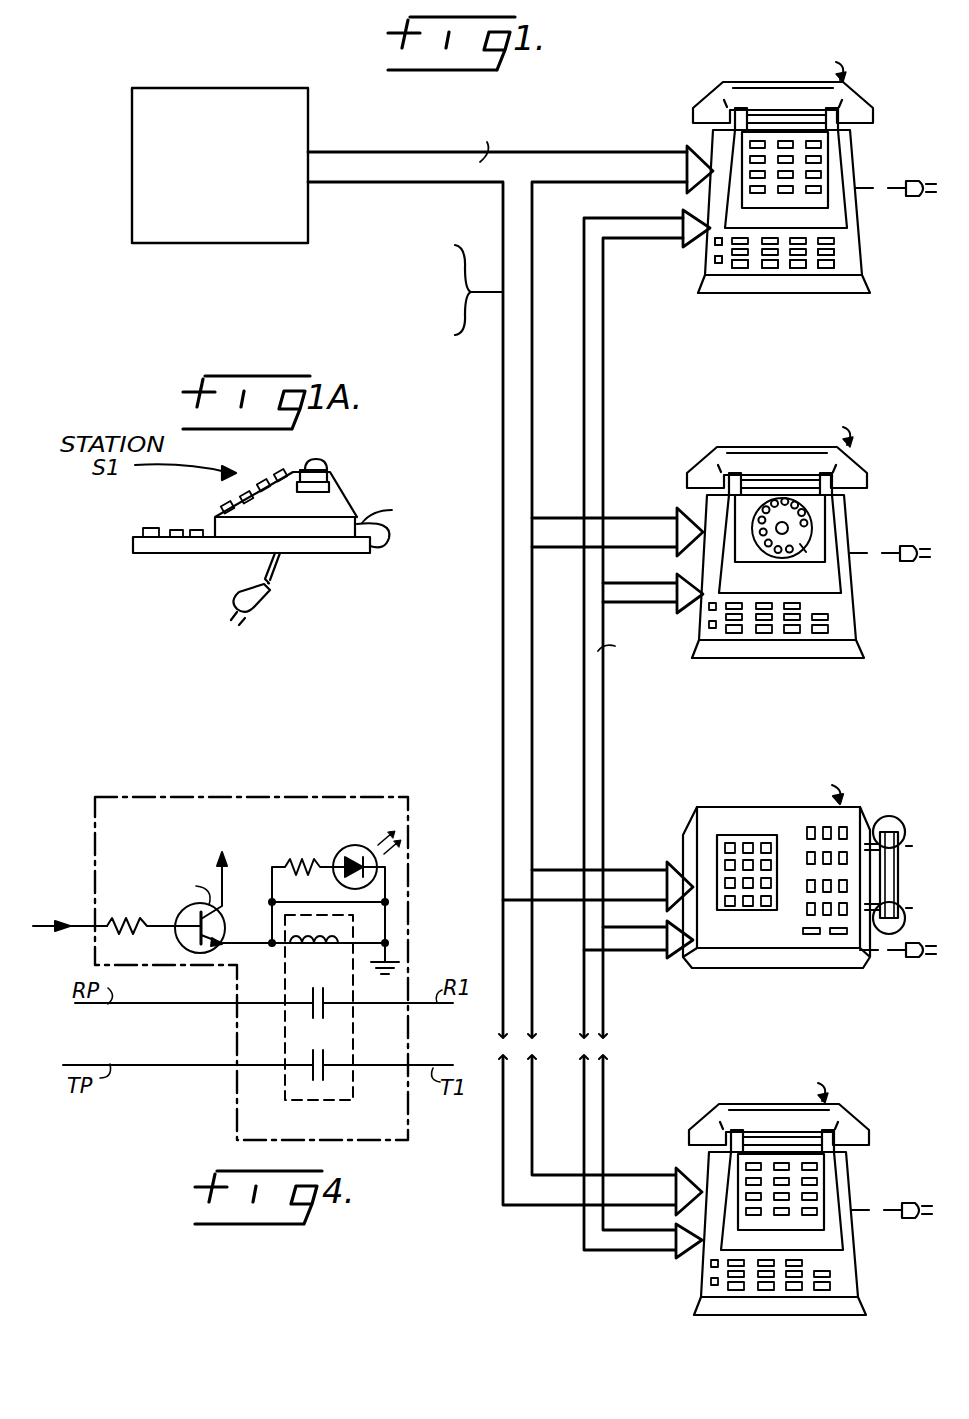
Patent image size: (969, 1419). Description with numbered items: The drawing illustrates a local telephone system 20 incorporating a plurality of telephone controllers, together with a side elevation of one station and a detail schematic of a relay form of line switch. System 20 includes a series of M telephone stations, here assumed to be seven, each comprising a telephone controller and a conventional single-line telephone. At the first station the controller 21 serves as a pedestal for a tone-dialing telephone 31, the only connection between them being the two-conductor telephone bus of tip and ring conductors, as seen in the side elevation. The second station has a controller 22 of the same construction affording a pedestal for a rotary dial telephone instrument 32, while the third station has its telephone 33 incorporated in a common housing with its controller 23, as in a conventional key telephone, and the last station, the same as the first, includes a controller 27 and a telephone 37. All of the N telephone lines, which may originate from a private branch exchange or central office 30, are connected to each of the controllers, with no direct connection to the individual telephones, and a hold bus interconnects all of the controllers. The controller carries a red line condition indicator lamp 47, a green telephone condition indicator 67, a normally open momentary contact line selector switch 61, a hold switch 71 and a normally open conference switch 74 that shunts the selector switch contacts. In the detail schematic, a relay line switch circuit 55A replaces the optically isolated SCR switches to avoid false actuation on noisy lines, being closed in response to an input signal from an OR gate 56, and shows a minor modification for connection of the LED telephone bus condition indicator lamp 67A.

In FIG. 1, the local telephone system 20 is at (492, 371).
In FIG. 1, the controller 21 is at (774, 210).
In FIG. 1A, the controller 21 is at (283, 539).
In FIG. 1, the controller 22 is at (808, 556).
In FIG. 1, the controller 23 is at (783, 893).
In FIG. 1, the controller 27 is at (797, 1215).
In FIG. 1, the private branch exchange or central office 30 is at (233, 88).
In FIG. 1, the telephone 31 is at (832, 168).
In FIG. 1A, the telephone 31 is at (340, 505).
In FIG. 1, the telephone instrument 32 is at (830, 543).
In FIG. 1, the telephone 33 is at (718, 850).
In FIG. 1, the telephone 37 is at (829, 1190).
In FIG. 1, the line condition indicator lamp 47 is at (837, 251).
In FIG. 1A, the line condition indicator lamp 47 is at (177, 529).
In FIG. 4, the line switch circuit 55A is at (250, 968).
In FIG. 4, the OR gate 56 is at (62, 928).
In FIG. 1A, the line selector switch 61 is at (150, 529).
In FIG. 1, the telephone condition indicator 67 is at (838, 241).
In FIG. 1A, the telephone condition indicator 67 is at (199, 529).
In FIG. 4, the telephone bus condition indicator lamp 67A is at (338, 852).
In FIG. 1, the hold switch 71 is at (717, 272).
In FIG. 1, the conference switch 74 is at (712, 247).